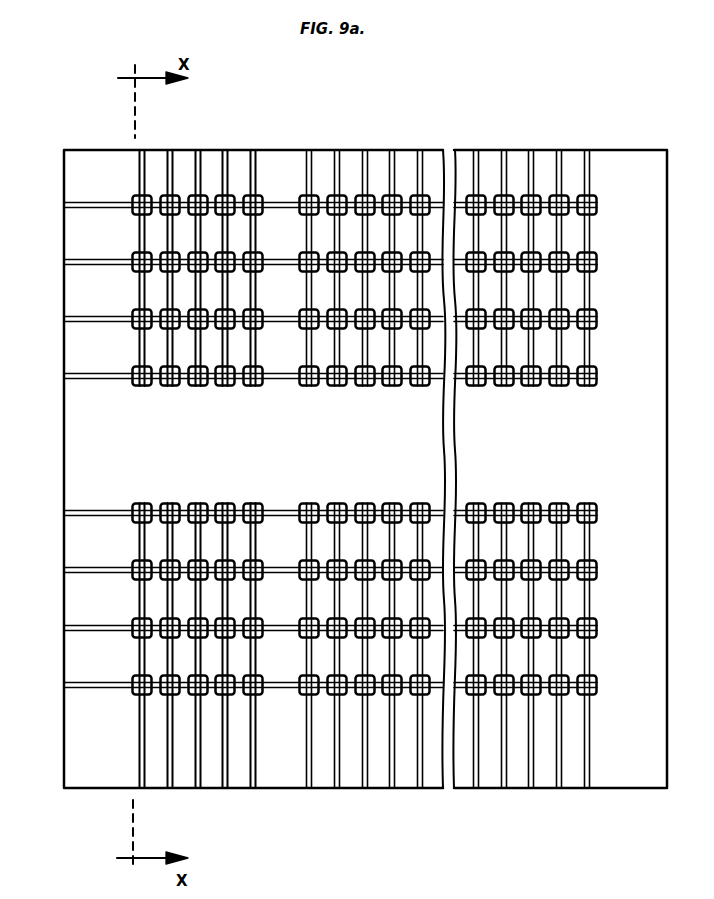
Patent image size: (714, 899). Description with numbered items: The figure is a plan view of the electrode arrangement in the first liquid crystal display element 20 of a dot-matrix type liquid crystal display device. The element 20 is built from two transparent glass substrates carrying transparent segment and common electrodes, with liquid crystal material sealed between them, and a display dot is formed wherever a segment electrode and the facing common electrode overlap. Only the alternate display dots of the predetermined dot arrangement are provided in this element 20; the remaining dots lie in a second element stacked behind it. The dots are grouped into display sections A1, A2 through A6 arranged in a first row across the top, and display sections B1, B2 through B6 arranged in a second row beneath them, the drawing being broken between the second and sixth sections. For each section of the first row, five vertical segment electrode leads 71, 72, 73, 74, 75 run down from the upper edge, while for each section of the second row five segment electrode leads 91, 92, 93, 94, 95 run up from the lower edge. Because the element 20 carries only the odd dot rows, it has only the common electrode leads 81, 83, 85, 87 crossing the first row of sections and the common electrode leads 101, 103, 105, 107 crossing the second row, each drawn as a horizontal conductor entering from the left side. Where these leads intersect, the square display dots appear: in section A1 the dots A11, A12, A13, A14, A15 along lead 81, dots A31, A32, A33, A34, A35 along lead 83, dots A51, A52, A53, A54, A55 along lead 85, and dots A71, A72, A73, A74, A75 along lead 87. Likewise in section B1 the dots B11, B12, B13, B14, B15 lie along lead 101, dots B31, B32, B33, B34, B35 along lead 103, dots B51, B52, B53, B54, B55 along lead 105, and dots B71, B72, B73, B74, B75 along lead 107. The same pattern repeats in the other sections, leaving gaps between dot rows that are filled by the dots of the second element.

The first liquid crystal display element 20 is at (628, 162).
The segment electrode lead 71 is at (139, 158).
The segment electrode lead 72 is at (170, 158).
The segment electrode lead 73 is at (198, 158).
The segment electrode lead 74 is at (226, 158).
The segment electrode lead 75 is at (254, 158).
The common electrode lead 81 is at (76, 202).
The common electrode lead 83 is at (76, 259).
The common electrode lead 85 is at (76, 316).
The common electrode lead 87 is at (76, 373).
The segment electrode lead 91 is at (133, 765).
The segment electrode lead 92 is at (163, 778).
The segment electrode lead 93 is at (190, 772).
The segment electrode lead 94 is at (228, 773).
The segment electrode lead 95 is at (240, 748).
The common electrode lead 101 is at (77, 511).
The common electrode lead 103 is at (77, 569).
The common electrode lead 105 is at (77, 626).
The common electrode lead 107 is at (77, 683).
The display section A1 is at (270, 162).
The display section A2 is at (540, 112).
The display section A6 is at (548, 162).
The display section B1 is at (240, 748).
The display section B2 is at (565, 818).
The display section B6 is at (515, 762).
The display dot A11 is at (133, 203).
The display dot A12 is at (163, 197).
The display dot A13 is at (192, 210).
The display dot A14 is at (230, 196).
The display dot A15 is at (258, 200).
The display dot A31 is at (134, 258).
The display dot A32 is at (161, 253).
The display dot A33 is at (192, 271).
The display dot A34 is at (231, 253).
The display dot A35 is at (256, 253).
The display dot A51 is at (133, 323).
The display dot A52 is at (166, 329).
The display dot A53 is at (190, 311).
The display dot A54 is at (231, 311).
The display dot A55 is at (255, 323).
The display dot A71 is at (142, 388).
The display dot A72 is at (168, 388).
The display dot A73 is at (196, 388).
The display dot A74 is at (225, 388).
The display dot A75 is at (255, 388).
The display dot B11 is at (139, 503).
The display dot B12 is at (168, 503).
The display dot B13 is at (198, 503).
The display dot B14 is at (232, 503).
The display dot B15 is at (262, 507).
The display dot B31 is at (133, 566).
The display dot B32 is at (164, 562).
The display dot B33 is at (198, 566).
The display dot B34 is at (235, 570).
The display dot B35 is at (254, 575).
The display dot B51 is at (135, 623).
The display dot B52 is at (163, 620).
The display dot B53 is at (192, 638).
The display dot B54 is at (234, 622).
The display dot B55 is at (257, 638).
The display dot B71 is at (133, 690).
The display dot B72 is at (163, 694).
The display dot B73 is at (195, 693).
The display dot B74 is at (226, 693).
The display dot B75 is at (251, 691).